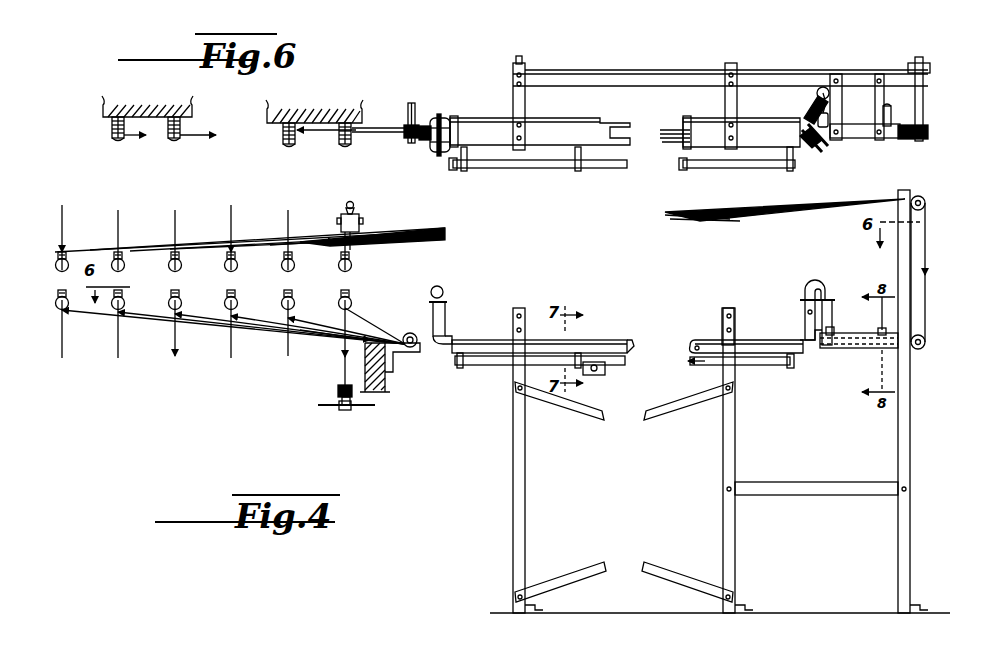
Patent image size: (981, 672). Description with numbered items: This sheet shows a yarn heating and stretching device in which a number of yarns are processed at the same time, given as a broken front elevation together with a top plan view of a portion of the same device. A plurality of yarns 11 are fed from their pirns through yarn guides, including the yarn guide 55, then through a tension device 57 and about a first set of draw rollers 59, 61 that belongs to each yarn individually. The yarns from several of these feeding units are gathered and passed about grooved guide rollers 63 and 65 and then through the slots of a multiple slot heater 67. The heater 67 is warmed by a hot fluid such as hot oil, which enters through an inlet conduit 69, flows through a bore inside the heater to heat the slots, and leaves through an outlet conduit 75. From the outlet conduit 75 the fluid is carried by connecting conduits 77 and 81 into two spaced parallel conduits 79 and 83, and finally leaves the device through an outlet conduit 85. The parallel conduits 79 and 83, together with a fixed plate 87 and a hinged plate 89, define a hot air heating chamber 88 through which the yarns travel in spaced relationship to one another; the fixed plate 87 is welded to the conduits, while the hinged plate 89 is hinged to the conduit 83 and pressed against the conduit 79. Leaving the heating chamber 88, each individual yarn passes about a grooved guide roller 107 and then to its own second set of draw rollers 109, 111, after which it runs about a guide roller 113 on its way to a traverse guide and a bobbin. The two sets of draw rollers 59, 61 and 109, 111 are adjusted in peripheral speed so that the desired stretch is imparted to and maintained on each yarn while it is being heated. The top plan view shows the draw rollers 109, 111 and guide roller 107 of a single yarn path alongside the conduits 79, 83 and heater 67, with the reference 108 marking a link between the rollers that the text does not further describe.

In FIG. 4, the yarns 11 is at (445, 232).
In FIG. 4, the yarn guide 55 is at (354, 205).
In FIG. 4, the tension device 57 is at (360, 222).
In FIG. 4, the draw roller 59 is at (228, 253).
In FIG. 4, the draw roller 61 is at (283, 265).
In FIG. 4, the grooved guide roller 63 is at (925, 198).
In FIG. 6, the grooved guide roller 65 is at (912, 140).
In FIG. 4, the grooved guide roller 65 is at (922, 346).
In FIG. 6, the multiple slot heater 67 is at (866, 140).
In FIG. 4, the multiple slot heater 67 is at (858, 335).
In FIG. 6, the inlet conduit 69 is at (892, 118).
In FIG. 4, the inlet conduit 69 is at (884, 350).
In FIG. 6, the outlet conduit 75 is at (836, 118).
In FIG. 4, the outlet conduit 75 is at (823, 350).
In FIG. 6, the connecting conduit 77 is at (812, 110).
In FIG. 4, the connecting conduit 77 is at (823, 290).
In FIG. 6, the parallel conduit 79 is at (755, 118).
In FIG. 4, the parallel conduit 79 is at (698, 340).
In FIG. 6, the connecting conduit 81 is at (432, 120).
In FIG. 4, the connecting conduit 81 is at (443, 294).
In FIG. 6, the parallel conduit 83 is at (632, 145).
In FIG. 4, the parallel conduit 83 is at (716, 345).
In FIG. 6, the outlet conduit 85 is at (820, 150).
In FIG. 4, the outlet conduit 85 is at (806, 324).
In FIG. 4, the fixed plate 87 is at (630, 342).
In FIG. 4, the hot air heating chamber 88 is at (575, 340).
In FIG. 4, the hinged plate 89 is at (626, 358).
In FIG. 6, the grooved guide roller 107 is at (409, 142).
In FIG. 4, the grooved guide roller 107 is at (411, 333).
In FIG. 6, the link rod 108 is at (355, 132).
In FIG. 4, the link rod 108 is at (350, 308).
In FIG. 6, the draw roller 109 is at (300, 145).
In FIG. 4, the draw roller 109 is at (342, 305).
In FIG. 6, the draw roller 111 is at (289, 146).
In FIG. 4, the draw roller 111 is at (342, 292).
In FIG. 4, the guide roller 113 is at (353, 394).